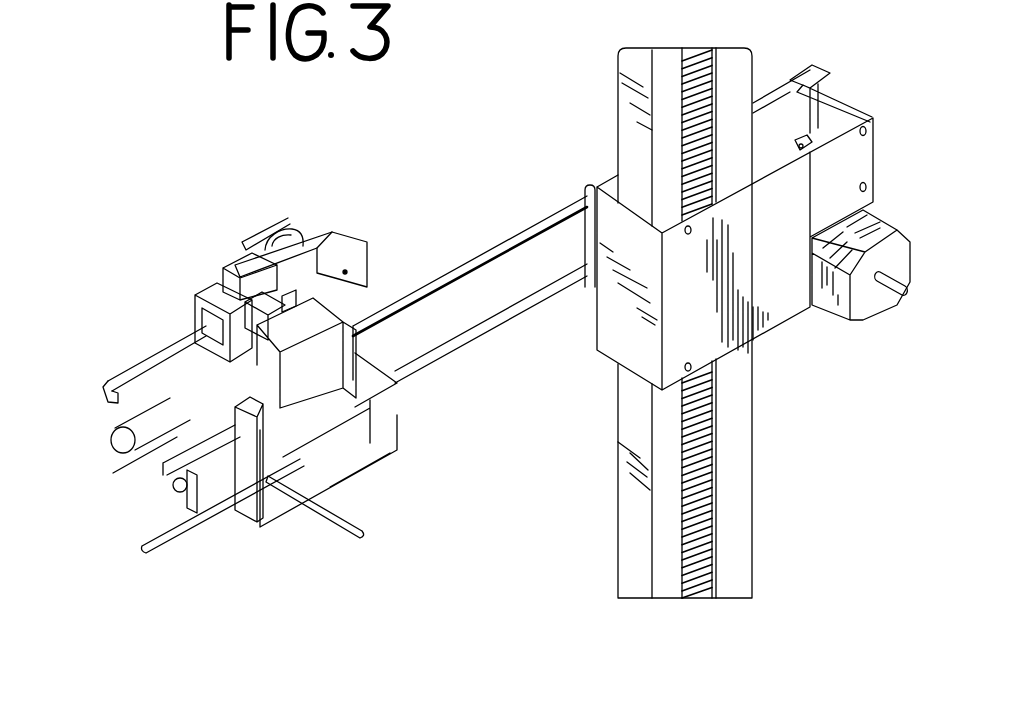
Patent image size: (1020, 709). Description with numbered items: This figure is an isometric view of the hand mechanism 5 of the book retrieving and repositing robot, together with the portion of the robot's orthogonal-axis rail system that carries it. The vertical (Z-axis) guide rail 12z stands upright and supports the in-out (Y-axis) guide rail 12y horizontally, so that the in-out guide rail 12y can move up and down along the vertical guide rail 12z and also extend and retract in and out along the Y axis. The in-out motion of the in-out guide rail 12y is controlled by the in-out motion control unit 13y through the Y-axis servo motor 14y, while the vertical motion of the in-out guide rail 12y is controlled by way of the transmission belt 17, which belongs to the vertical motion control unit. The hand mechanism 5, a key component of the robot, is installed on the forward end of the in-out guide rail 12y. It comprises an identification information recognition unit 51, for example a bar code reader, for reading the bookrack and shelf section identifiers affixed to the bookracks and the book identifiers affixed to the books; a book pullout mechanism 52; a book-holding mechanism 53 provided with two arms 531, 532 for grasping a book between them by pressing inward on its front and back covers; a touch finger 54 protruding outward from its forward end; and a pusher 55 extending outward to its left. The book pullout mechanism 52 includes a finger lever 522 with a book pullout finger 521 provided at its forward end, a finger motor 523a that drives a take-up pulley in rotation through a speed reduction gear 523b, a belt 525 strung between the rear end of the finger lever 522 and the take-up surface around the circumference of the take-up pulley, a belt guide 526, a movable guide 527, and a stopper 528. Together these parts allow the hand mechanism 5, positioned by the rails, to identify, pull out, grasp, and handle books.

The hand mechanism 5 is at (256, 383).
The in-out (Y-axis) guide rail 12y is at (517, 298).
The vertical (Z-axis) guide rail 12z is at (738, 495).
The in-out motion control unit 13y is at (787, 300).
The Y-axis servo motor 14y is at (877, 308).
The transmission belt 17 is at (690, 598).
The identification information recognition unit 51 is at (183, 492).
The book pullout mechanism 52 is at (232, 278).
The book-holding mechanism 53 is at (250, 397).
The touch finger 54 is at (153, 549).
The pusher 55 is at (362, 540).
The book pullout finger 521 is at (105, 394).
The finger lever 522 is at (124, 359).
The finger motor 523a is at (240, 266).
The speed reduction gear 523b is at (308, 228).
The belt 525 is at (336, 285).
The belt guide 526 is at (290, 302).
The movable guide 527 is at (213, 292).
The stopper 528 is at (177, 298).
The arm 531 is at (110, 443).
The arm 532 is at (165, 482).